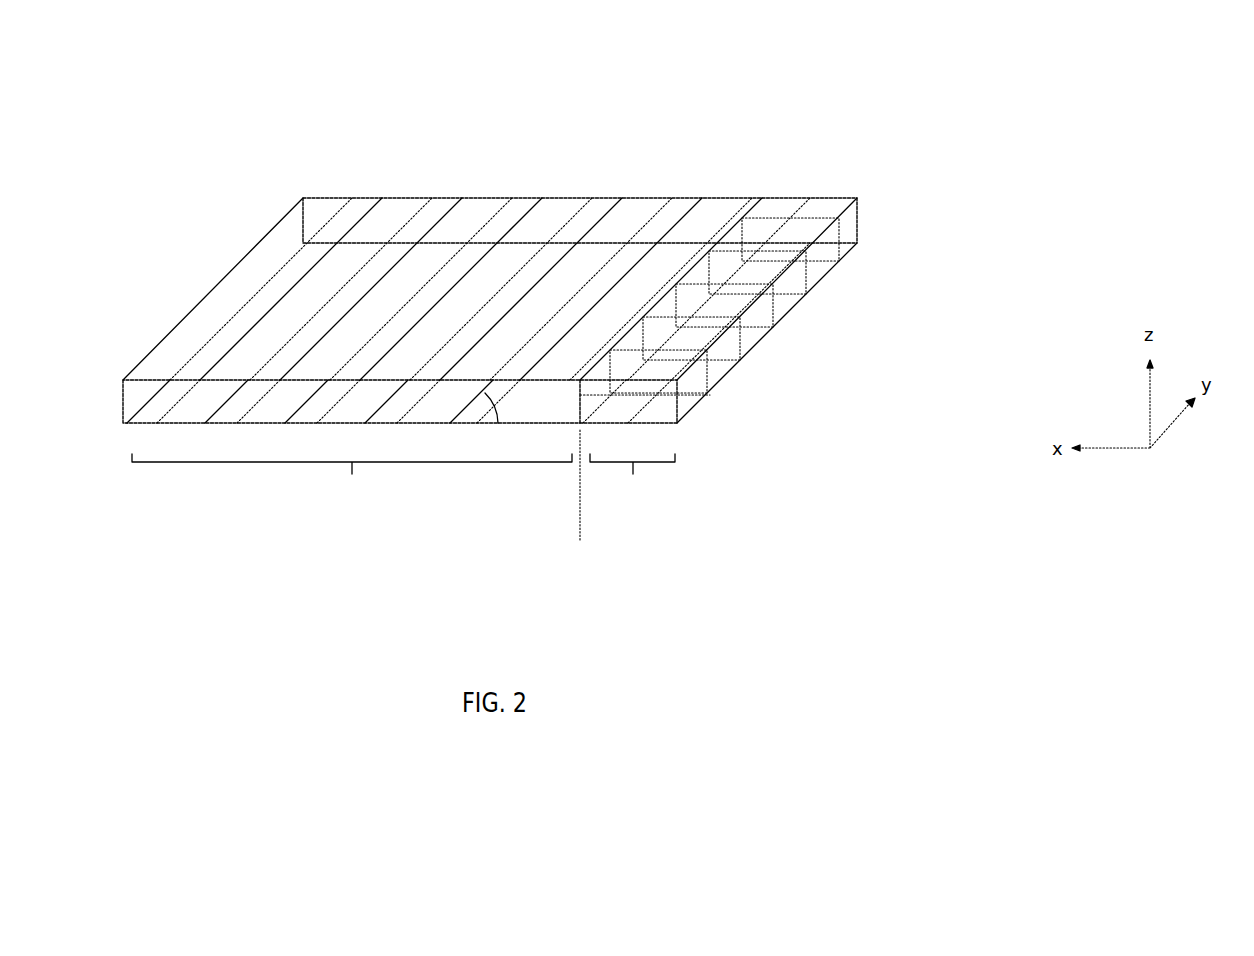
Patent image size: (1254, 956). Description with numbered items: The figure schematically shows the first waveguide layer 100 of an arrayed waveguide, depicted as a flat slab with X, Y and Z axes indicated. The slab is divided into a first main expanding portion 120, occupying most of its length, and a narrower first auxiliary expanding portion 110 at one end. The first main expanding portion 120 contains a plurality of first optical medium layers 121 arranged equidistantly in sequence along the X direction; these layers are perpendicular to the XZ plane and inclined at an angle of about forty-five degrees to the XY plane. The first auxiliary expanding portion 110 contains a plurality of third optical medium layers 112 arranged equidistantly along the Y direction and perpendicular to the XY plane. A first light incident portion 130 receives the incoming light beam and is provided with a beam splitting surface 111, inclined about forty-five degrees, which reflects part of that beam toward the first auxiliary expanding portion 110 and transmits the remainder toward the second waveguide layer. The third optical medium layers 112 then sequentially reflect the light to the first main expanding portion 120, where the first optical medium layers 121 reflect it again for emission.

The first waveguide layer 100 is at (186, 60).
The first auxiliary expanding portion 110 is at (671, 369).
The beam splitting surface 111 is at (690, 385).
The third optical medium layer 112 is at (803, 250).
The first main expanding portion 120 is at (349, 460).
The first optical medium layer 121 is at (358, 213).
The first light incident portion 130 is at (635, 358).